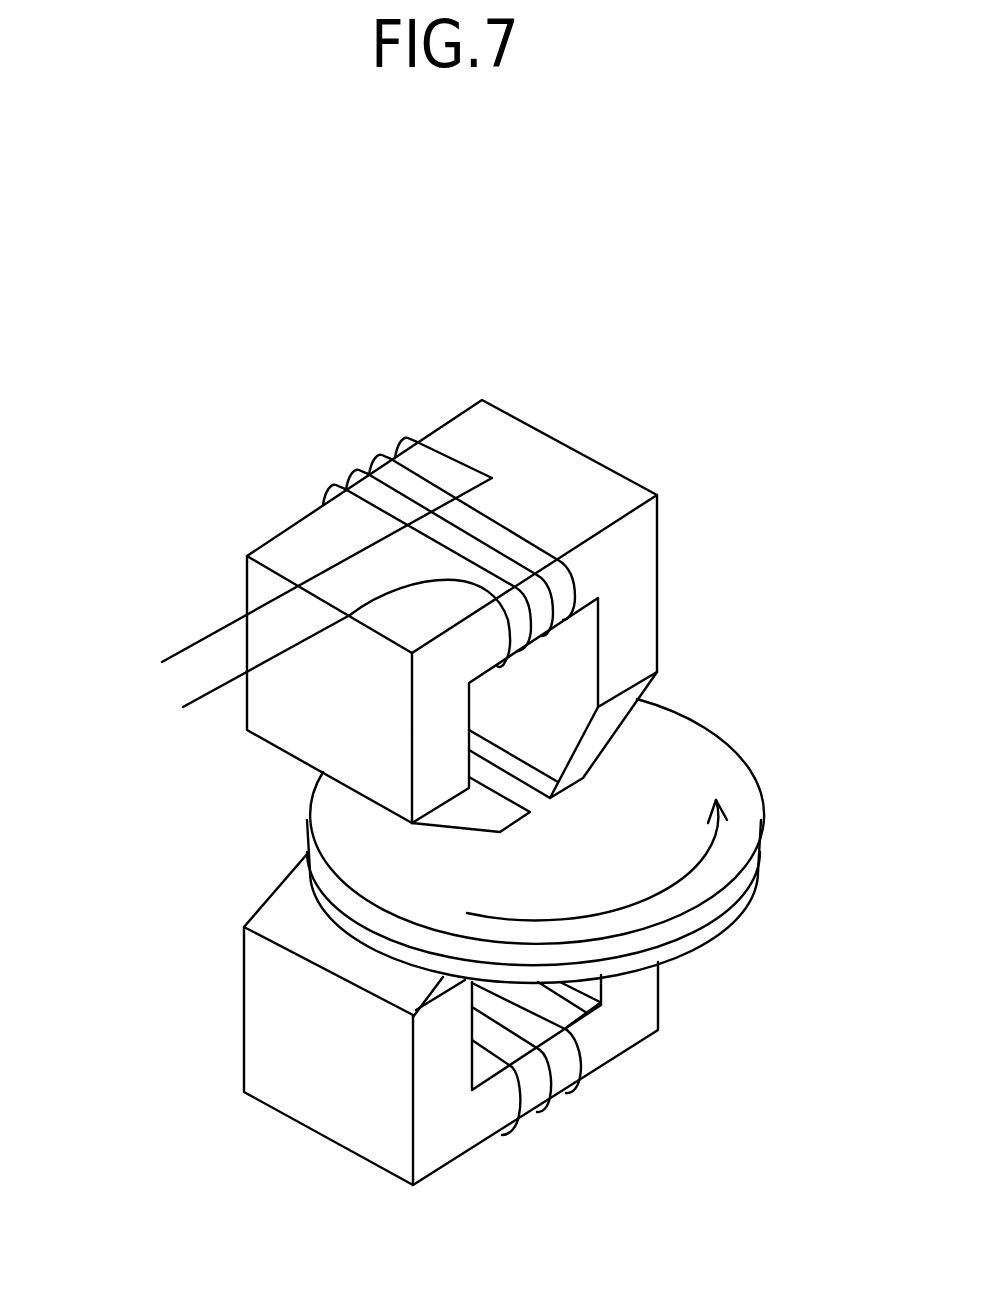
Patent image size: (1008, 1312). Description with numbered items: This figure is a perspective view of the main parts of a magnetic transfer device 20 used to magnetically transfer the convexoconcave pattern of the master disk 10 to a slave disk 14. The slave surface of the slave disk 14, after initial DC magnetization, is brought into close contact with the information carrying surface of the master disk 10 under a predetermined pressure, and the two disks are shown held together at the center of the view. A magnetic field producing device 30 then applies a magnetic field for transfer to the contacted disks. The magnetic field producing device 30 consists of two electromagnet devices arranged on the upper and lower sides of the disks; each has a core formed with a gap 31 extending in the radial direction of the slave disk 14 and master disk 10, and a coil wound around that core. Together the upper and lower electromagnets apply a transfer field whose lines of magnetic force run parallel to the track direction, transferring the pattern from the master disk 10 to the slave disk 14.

The magnetic transfer device 20 is at (114, 437).
The magnetic field producing device 30 is at (313, 503).
The gap 31 is at (536, 804).
The slave disk 14 is at (730, 868).
The master disk 10 is at (703, 936).